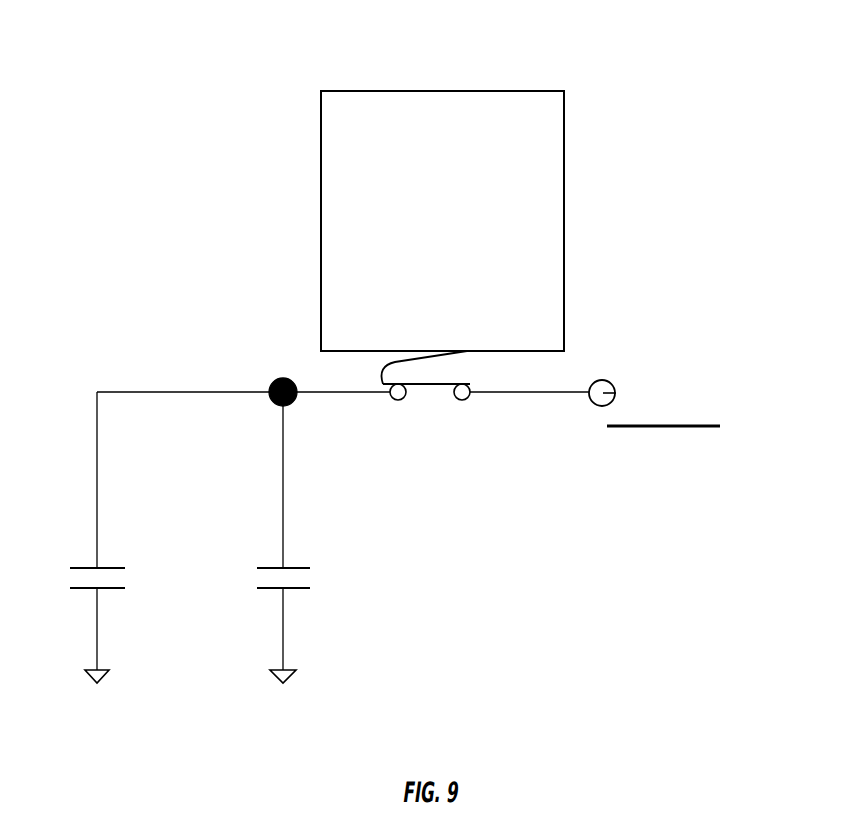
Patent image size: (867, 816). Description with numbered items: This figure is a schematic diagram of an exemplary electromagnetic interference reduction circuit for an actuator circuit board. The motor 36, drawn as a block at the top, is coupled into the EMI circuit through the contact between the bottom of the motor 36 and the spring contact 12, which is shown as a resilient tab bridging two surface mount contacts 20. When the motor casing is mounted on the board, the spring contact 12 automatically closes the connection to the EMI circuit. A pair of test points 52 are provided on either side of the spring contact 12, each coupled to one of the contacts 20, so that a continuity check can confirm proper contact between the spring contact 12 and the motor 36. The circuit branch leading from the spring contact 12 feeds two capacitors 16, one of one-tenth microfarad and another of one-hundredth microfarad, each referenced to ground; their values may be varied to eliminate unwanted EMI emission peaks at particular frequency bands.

The motor 36 is at (588, 248).
The spring contact 12 is at (456, 413).
The surface mount contacts 20 is at (396, 401).
The test points 52 is at (273, 382).
The capacitors 16 is at (79, 559).